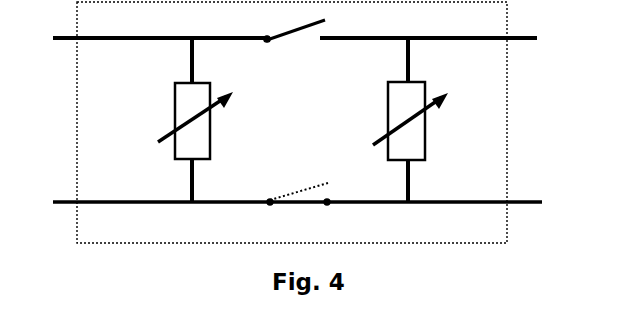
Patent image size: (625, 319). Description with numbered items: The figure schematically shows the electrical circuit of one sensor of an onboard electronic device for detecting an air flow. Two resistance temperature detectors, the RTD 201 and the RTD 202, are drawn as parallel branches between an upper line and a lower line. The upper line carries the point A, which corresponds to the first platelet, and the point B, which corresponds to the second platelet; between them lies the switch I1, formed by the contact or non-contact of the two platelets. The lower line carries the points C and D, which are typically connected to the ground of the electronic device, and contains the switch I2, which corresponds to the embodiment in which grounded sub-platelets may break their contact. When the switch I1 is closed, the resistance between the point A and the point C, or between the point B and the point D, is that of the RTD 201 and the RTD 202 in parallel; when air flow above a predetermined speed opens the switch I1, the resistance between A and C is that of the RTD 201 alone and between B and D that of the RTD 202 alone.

The RTD 201 is at (176, 130).
The RTD 202 is at (413, 137).
The switch I1 is at (294, 48).
The switch I2 is at (302, 214).
The point A is at (153, 27).
The point B is at (430, 25).
The point C is at (169, 189).
The point D is at (421, 189).